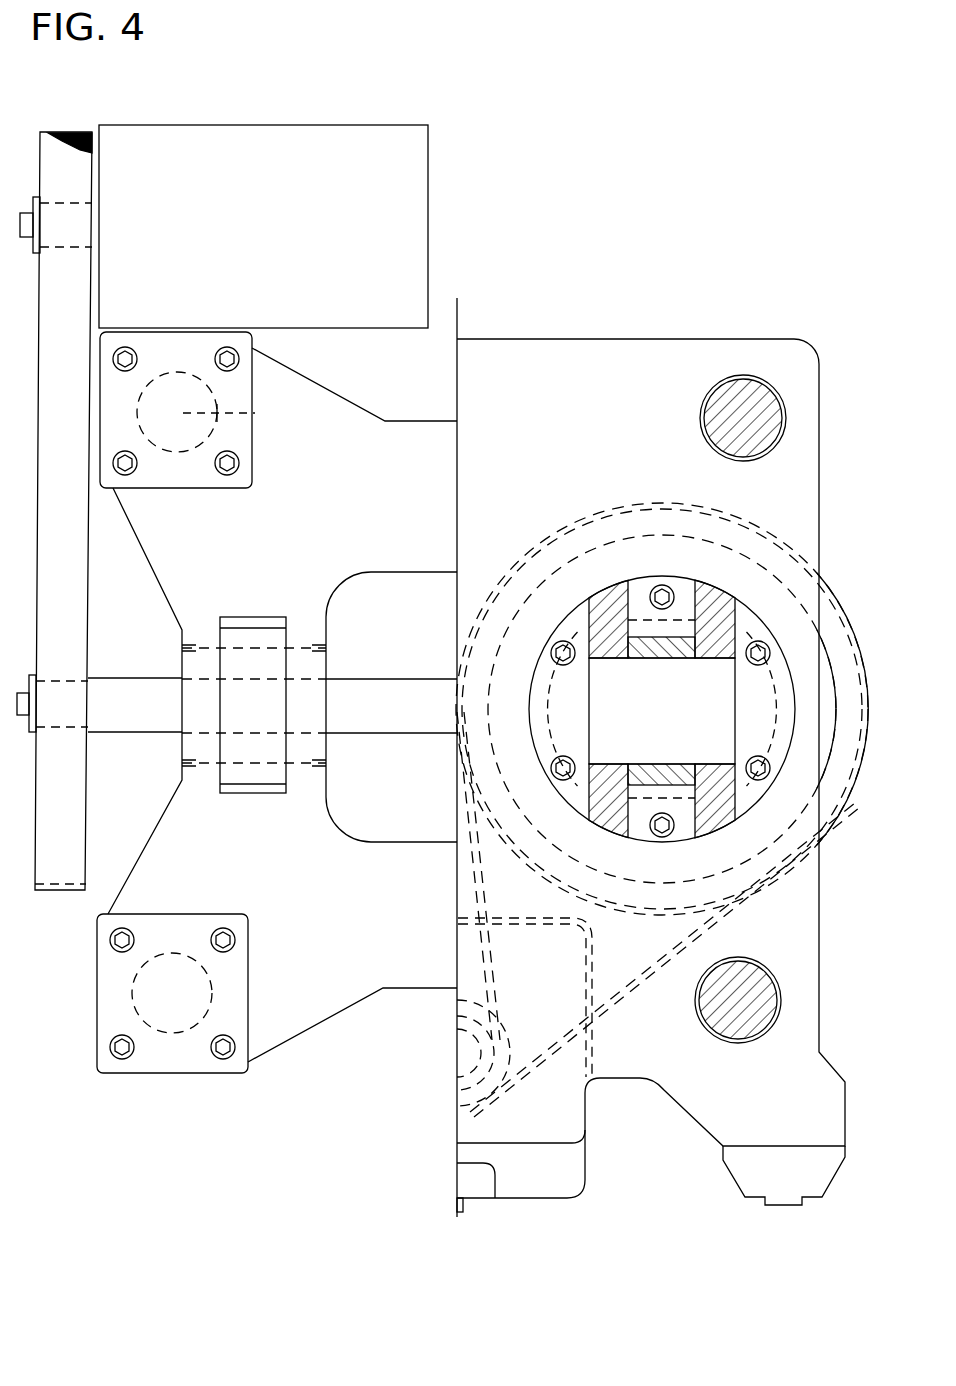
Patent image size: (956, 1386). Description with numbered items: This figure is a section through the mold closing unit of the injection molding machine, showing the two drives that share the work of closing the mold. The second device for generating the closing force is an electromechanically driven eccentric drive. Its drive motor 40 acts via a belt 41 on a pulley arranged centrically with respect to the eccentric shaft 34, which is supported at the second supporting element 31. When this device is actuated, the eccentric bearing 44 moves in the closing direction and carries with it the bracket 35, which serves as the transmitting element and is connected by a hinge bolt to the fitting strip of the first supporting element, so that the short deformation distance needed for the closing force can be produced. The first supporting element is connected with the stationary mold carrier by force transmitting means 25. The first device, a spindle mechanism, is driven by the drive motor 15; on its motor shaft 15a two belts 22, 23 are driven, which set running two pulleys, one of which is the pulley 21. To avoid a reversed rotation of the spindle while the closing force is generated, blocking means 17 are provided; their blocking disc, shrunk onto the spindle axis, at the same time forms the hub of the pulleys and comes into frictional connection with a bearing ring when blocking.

The drive motor 15 is at (550, 1173).
The motor shaft 15a is at (447, 1052).
The blocking means 17 is at (640, 560).
The pulley 21 is at (523, 590).
The belt 22 is at (562, 528).
The belt 23 is at (478, 893).
The force transmitting means 25 is at (264, 419).
The second supporting element 31 is at (370, 515).
The eccentric shaft 34 is at (403, 702).
The bracket 35 is at (267, 722).
The drive motor 40 is at (262, 242).
The belt 41 is at (72, 322).
The eccentric bearing 44 is at (202, 660).